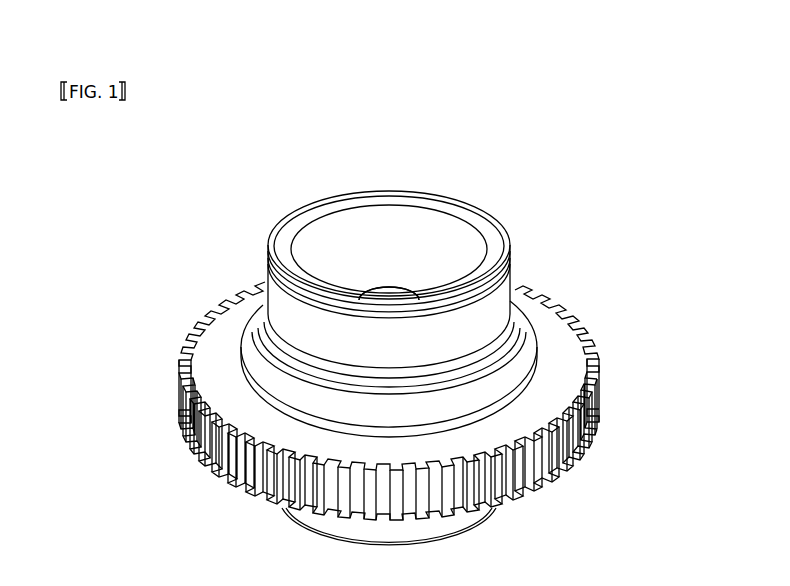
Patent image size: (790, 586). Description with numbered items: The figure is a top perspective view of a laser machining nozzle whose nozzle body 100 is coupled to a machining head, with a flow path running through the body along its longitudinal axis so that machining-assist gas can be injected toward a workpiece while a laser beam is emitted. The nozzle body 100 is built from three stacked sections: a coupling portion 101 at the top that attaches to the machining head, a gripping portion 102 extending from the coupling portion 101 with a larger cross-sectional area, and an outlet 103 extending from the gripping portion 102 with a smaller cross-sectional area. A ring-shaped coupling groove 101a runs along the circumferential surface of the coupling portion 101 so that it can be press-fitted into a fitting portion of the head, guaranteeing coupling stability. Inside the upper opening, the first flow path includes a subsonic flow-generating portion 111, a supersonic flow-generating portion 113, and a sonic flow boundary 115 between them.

The nozzle body 100 is at (112, 262).
The coupling portion 101 is at (268, 299).
The coupling groove 101a is at (500, 343).
The gripping portion 102 is at (167, 393).
The outlet 103 is at (273, 522).
The subsonic flow-generating portion 111 is at (367, 233).
The supersonic flow-generating portion 113 is at (398, 292).
The sonic flow boundary 115 is at (389, 293).